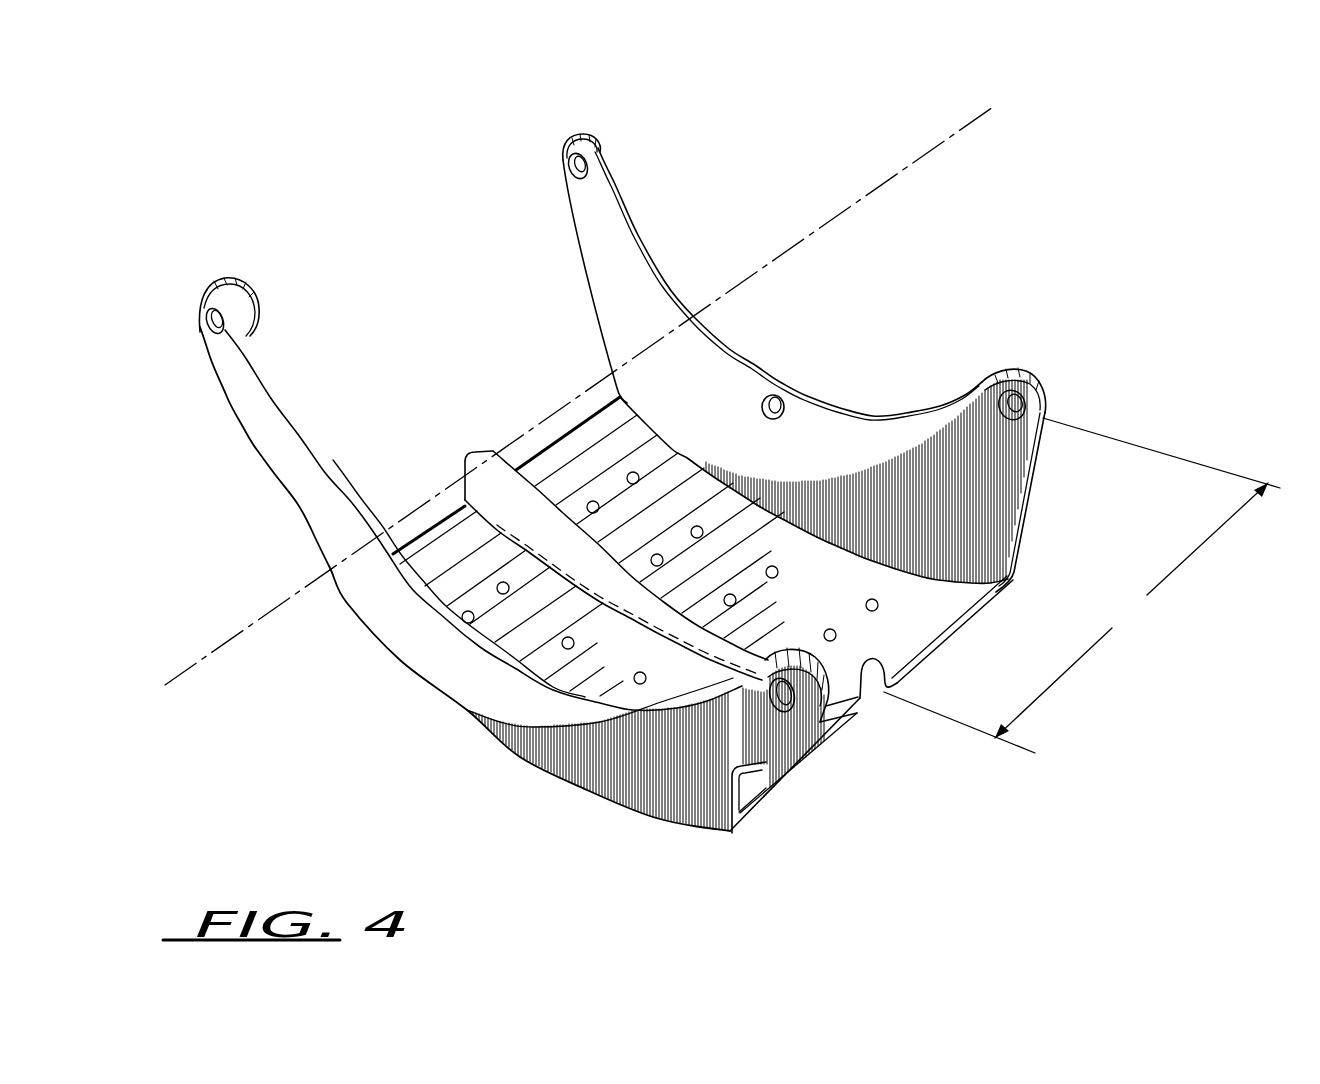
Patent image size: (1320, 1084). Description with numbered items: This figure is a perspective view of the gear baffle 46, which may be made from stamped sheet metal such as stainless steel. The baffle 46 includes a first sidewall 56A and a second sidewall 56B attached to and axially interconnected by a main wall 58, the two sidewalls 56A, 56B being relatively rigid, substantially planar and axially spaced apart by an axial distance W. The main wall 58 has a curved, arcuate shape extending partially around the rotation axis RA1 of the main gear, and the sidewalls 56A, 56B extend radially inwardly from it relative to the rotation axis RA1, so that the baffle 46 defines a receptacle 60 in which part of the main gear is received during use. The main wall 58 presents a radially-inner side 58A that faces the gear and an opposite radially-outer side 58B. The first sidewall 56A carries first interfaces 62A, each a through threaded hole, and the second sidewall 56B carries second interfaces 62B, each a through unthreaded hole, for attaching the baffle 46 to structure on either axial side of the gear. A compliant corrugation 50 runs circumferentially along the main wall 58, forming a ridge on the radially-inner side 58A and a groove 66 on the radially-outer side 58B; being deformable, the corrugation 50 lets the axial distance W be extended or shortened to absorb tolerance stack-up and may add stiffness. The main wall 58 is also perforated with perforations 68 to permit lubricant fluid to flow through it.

The baffle 46 is at (712, 140).
The corrugation 50 is at (482, 456).
The first sidewall 56A is at (433, 657).
The second sidewall 56B is at (608, 276).
The main wall 58 is at (788, 782).
The radially-inner side 58A is at (730, 581).
The radially-outer side 58B is at (847, 760).
The receptacle 60 is at (552, 386).
The first interfaces 62A is at (203, 330).
The second interfaces 62B is at (566, 173).
The groove 66 is at (884, 682).
The perforations 68 is at (838, 634).
The rotation axis RA1 is at (953, 136).
The axial distance W is at (1082, 585).